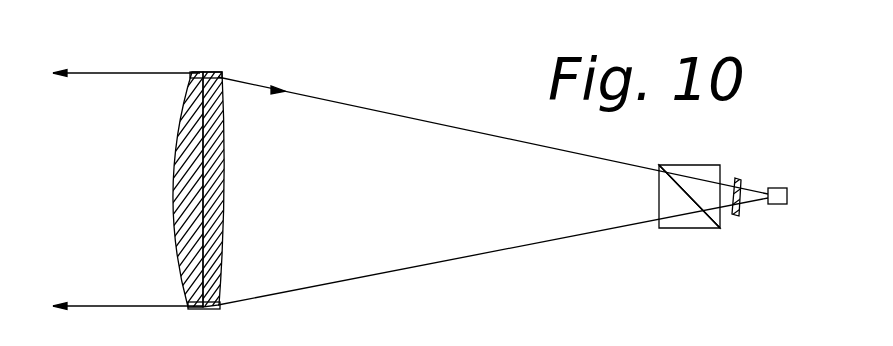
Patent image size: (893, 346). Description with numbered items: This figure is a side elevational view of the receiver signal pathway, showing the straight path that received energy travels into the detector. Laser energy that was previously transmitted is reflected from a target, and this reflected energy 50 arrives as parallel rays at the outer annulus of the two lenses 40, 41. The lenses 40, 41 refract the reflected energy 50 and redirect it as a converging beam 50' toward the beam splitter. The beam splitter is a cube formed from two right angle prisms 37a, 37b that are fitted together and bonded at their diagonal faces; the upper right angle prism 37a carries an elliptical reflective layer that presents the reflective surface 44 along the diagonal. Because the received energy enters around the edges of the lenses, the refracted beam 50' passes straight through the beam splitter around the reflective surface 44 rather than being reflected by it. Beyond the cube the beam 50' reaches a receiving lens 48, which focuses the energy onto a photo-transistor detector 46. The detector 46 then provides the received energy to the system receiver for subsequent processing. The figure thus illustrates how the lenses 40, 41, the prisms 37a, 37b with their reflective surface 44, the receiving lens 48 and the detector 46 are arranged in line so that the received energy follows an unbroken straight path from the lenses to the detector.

The reflected energy 50 is at (128, 170).
The refracted beam 50' is at (493, 191).
The lens 41 is at (177, 139).
The lens 40 is at (223, 148).
The upper right angle prism 37a is at (703, 164).
The right angle prism 37b is at (698, 229).
The reflective surface 44 is at (680, 191).
The receiving lens 48 is at (736, 180).
The photo-transistor detector 46 is at (780, 205).